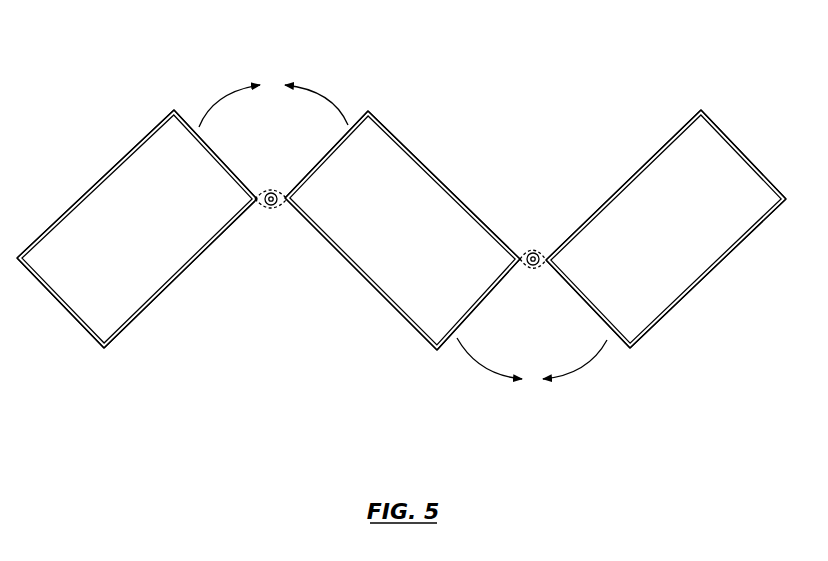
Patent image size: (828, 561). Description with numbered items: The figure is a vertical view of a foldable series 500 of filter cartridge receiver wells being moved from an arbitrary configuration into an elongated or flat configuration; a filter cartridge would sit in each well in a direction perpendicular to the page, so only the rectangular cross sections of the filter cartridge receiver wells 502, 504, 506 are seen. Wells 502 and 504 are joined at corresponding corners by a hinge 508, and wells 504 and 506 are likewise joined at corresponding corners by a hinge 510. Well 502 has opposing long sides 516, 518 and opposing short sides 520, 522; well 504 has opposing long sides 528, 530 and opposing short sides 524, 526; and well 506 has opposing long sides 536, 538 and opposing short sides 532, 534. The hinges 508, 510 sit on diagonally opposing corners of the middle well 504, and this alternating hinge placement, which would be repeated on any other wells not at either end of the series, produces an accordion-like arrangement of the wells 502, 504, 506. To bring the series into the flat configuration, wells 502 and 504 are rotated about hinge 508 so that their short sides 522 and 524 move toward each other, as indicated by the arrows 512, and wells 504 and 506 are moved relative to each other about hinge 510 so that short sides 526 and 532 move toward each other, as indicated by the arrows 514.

The foldable display device 500 is at (794, 22).
The filter cartridge receiver well 502 is at (82, 197).
The filter cartridge receiver well 504 is at (371, 293).
The filter cartridge receiver well 506 is at (760, 171).
The hinge 508 is at (271, 206).
The hinge 510 is at (533, 252).
The arrows 512 is at (243, 84).
The arrows 514 is at (483, 368).
The long side 516 is at (133, 148).
The long side 518 is at (177, 278).
The short side 520 is at (52, 295).
The short side 522 is at (214, 150).
The short side 524 is at (323, 158).
The short side 526 is at (478, 306).
The long side 528 is at (432, 172).
The long side 530 is at (385, 298).
The short side 532 is at (602, 317).
The short side 534 is at (733, 139).
The long side 536 is at (640, 166).
The long side 538 is at (737, 247).